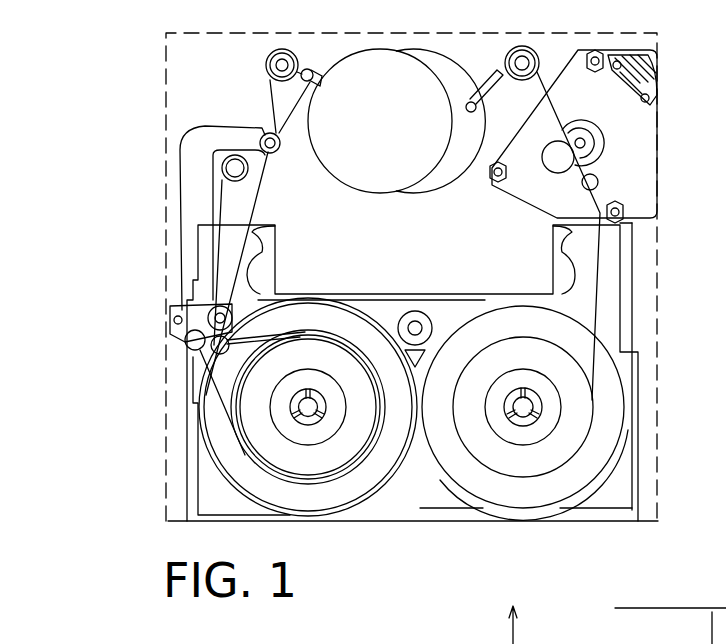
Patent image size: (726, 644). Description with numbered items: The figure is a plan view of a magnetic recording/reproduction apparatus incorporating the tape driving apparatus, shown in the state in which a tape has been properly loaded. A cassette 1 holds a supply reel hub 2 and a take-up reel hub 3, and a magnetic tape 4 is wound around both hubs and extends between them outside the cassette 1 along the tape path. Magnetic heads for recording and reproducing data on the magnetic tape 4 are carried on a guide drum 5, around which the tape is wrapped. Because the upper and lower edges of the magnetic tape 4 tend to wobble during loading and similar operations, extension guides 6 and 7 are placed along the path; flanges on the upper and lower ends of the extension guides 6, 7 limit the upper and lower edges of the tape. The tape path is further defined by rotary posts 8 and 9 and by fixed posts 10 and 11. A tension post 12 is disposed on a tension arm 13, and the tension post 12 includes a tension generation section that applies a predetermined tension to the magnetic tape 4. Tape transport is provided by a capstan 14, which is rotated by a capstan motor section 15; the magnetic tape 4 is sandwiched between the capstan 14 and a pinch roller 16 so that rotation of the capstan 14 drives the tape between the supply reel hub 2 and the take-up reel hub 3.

The cassette 1 is at (635, 315).
The supply reel hub 2 is at (322, 407).
The take-up reel hub 3 is at (535, 393).
The magnetic tape 4 is at (275, 108).
The guide drum 5 is at (433, 58).
The extension guide 6 is at (250, 168).
The extension guide 7 is at (598, 182).
The rotary post 8 is at (287, 48).
The rotary post 9 is at (528, 50).
The fixed post 10 is at (320, 78).
The fixed post 11 is at (492, 80).
The tension post 12 is at (260, 135).
The tension arm 13 is at (188, 176).
The capstan 14 is at (587, 147).
The capstan motor section 15 is at (652, 127).
The pinch roller 16 is at (553, 167).